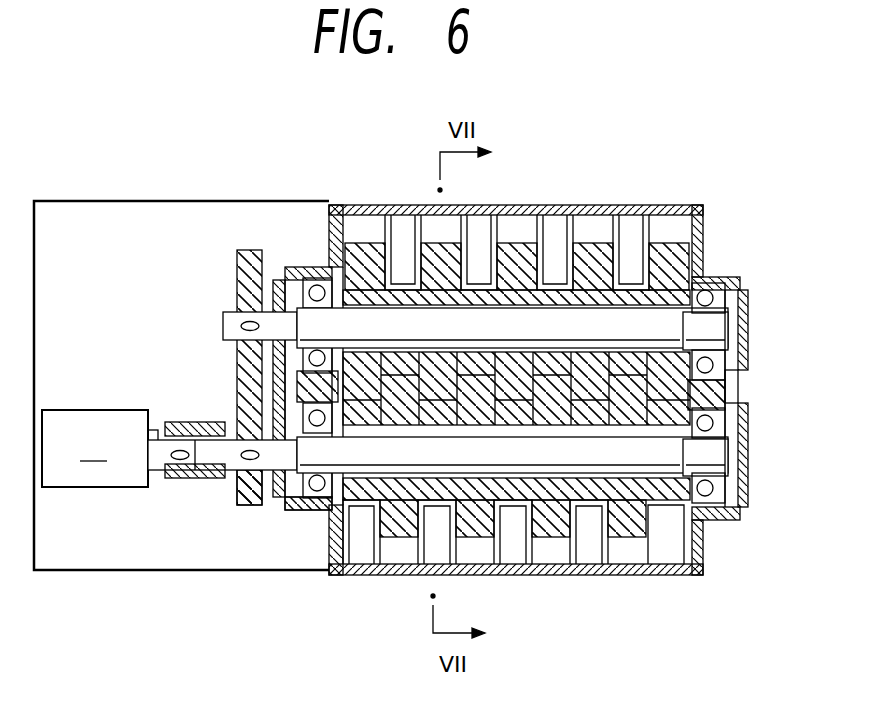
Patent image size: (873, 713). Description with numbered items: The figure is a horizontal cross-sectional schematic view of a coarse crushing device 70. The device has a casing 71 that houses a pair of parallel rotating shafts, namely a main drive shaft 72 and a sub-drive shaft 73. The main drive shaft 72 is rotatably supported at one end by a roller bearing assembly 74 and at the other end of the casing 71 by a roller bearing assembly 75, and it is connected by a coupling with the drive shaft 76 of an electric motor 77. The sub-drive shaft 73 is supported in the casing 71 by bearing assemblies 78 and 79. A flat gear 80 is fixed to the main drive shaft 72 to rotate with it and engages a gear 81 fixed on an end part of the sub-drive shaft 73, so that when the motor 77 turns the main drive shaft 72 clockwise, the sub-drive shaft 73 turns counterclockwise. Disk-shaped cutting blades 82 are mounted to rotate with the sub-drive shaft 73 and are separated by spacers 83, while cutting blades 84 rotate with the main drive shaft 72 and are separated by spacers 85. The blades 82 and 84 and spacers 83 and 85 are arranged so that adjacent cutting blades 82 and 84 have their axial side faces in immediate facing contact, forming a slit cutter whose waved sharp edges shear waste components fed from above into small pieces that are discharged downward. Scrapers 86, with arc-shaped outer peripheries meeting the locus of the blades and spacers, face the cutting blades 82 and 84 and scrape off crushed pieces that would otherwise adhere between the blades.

The coarse crushing device 70 is at (317, 190).
The casing 71 is at (690, 578).
The main drive shaft 72 is at (705, 458).
The sub-drive shaft 73 is at (705, 330).
The roller bearing assembly 74 is at (725, 490).
The roller bearing assembly 75 is at (298, 510).
The drive shaft 76 is at (178, 480).
The electric motor 77 is at (100, 448).
The bearing assembly 78 is at (715, 277).
The bearing assembly 79 is at (300, 265).
The flat gear 80 is at (248, 506).
The gear 81 is at (238, 250).
The cutting blades 82 is at (352, 205).
The spacers 83 is at (395, 210).
The cutting blades 84 is at (368, 530).
The spacers 85 is at (398, 560).
The scrapers 86 is at (508, 215).